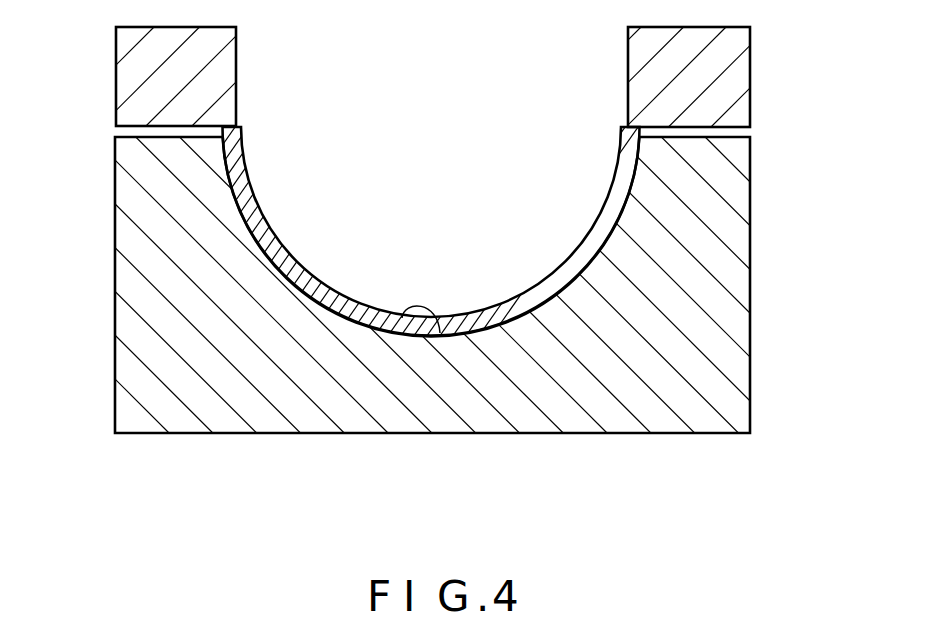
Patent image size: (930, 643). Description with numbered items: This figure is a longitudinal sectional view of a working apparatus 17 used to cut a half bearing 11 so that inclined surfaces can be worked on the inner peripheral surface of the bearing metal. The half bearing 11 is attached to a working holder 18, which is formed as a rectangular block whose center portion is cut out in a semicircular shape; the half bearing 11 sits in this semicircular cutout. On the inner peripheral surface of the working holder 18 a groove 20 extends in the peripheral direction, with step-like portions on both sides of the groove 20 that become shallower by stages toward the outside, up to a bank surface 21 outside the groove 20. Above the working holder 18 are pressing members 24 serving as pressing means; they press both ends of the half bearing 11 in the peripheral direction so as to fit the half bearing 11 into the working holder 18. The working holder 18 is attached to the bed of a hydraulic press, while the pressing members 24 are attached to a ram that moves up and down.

The half bearing 11 is at (608, 192).
The working apparatus 17 is at (770, 135).
The working holder 18 is at (755, 240).
The groove 20 is at (402, 318).
The bank surface 21 is at (146, 132).
The pressing members 24 is at (115, 88).